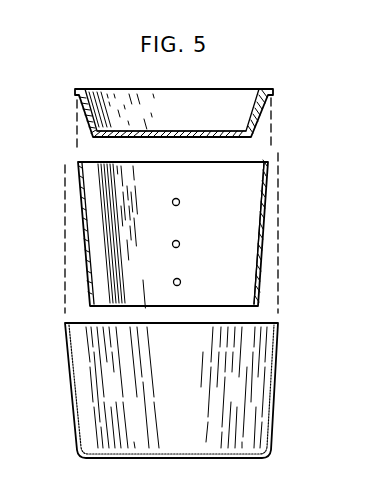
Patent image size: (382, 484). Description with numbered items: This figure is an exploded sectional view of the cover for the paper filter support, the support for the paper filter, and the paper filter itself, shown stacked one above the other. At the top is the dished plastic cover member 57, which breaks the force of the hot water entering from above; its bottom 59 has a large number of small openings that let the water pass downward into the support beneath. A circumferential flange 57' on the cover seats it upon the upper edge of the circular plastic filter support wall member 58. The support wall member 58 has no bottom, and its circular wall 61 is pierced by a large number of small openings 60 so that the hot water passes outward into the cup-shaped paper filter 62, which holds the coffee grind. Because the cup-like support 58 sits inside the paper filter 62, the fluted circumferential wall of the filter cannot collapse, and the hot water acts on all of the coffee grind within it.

The dished plastic cover member 57 is at (214, 119).
The circumferential flange 57' is at (195, 93).
The circular plastic filter support wall member 58 is at (78, 226).
The bottom 59 is at (243, 128).
The small openings 60 is at (262, 203).
The circular wall 61 is at (264, 197).
The cup-shaped paper filter 62 is at (75, 381).